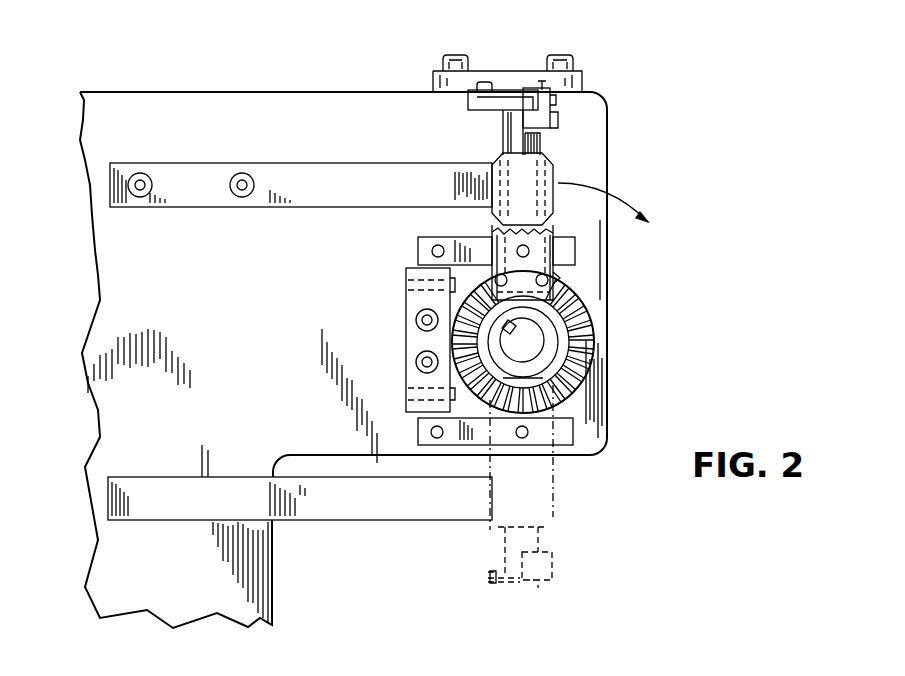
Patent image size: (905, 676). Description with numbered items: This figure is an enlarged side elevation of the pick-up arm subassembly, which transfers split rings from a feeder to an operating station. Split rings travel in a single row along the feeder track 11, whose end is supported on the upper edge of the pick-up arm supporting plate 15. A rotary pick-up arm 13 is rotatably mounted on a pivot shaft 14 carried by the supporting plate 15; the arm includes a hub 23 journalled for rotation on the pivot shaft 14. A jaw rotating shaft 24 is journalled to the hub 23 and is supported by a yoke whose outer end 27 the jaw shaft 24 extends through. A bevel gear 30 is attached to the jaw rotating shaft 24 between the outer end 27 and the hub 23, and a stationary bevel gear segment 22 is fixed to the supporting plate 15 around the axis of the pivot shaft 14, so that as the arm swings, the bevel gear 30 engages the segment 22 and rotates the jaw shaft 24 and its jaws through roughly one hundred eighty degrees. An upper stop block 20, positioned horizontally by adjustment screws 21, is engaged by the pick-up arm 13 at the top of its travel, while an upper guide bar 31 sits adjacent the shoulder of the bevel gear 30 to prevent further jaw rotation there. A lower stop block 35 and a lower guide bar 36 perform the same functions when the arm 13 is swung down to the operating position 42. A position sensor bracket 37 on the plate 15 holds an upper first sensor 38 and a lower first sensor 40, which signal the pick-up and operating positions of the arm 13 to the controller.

The feeder track 11 is at (497, 98).
The rotary pick-up arm 13 is at (560, 171).
The pivot shaft 14 is at (530, 355).
The pick-up arm supporting plate 15 is at (280, 289).
The upper stop block 20 is at (330, 182).
The adjustment screws 21 is at (232, 196).
The stationary bevel gear segment 22 is at (583, 375).
The hub 23 is at (535, 320).
The jaw rotating shaft 24 is at (518, 137).
The outer end of yoke 27 is at (527, 171).
The bevel gear 30 is at (555, 280).
The upper guide bar 31 is at (460, 243).
The lower stop block 35 is at (381, 508).
The lower guide bar 36 is at (535, 446).
The position sensor bracket 37 is at (406, 345).
The upper first sensor 38 is at (406, 285).
The lower first sensor 40 is at (406, 395).
The operating position 42 is at (488, 575).